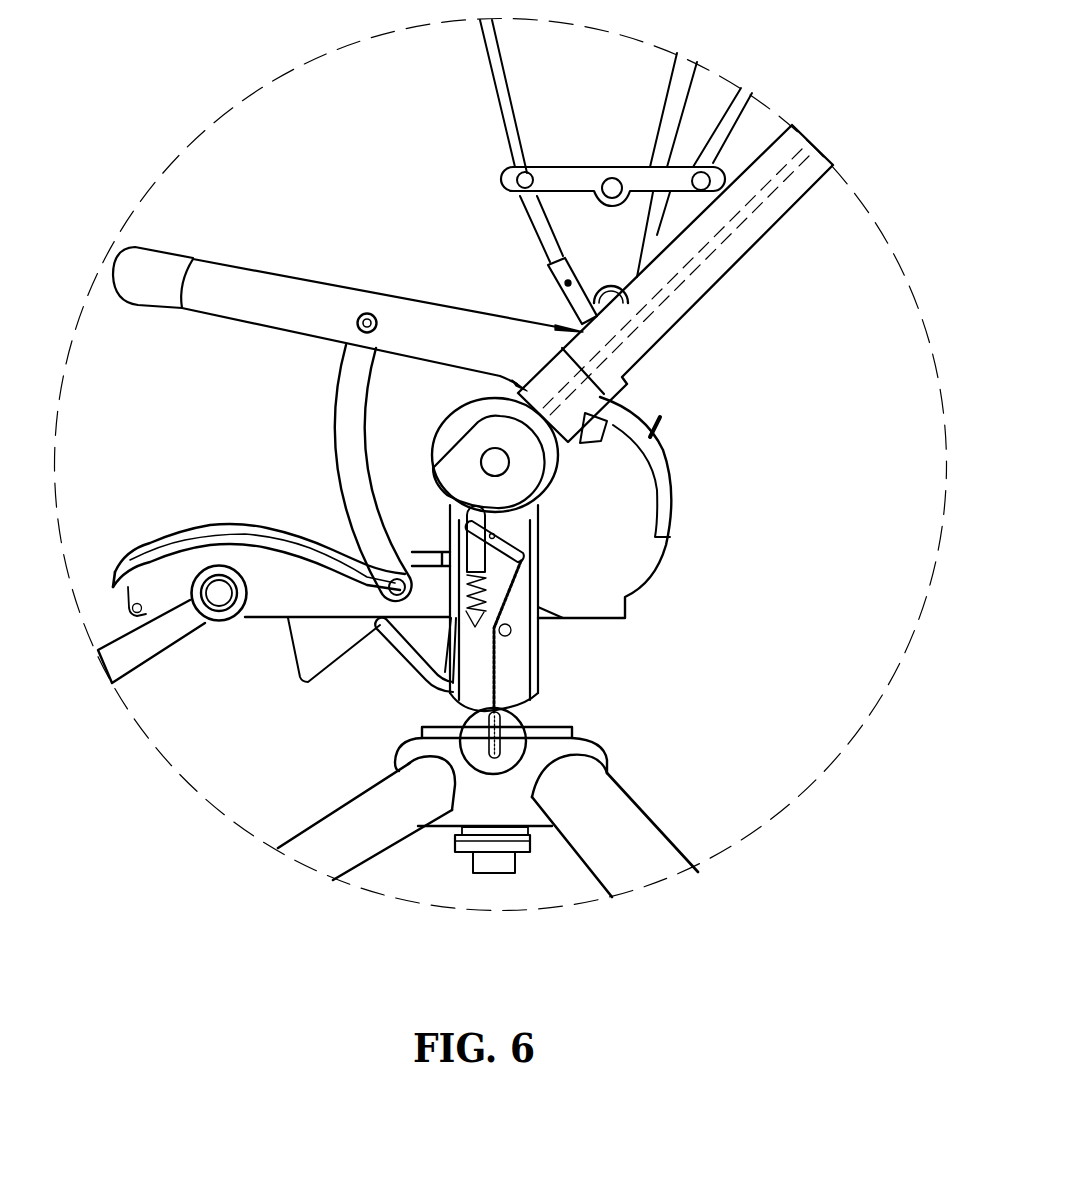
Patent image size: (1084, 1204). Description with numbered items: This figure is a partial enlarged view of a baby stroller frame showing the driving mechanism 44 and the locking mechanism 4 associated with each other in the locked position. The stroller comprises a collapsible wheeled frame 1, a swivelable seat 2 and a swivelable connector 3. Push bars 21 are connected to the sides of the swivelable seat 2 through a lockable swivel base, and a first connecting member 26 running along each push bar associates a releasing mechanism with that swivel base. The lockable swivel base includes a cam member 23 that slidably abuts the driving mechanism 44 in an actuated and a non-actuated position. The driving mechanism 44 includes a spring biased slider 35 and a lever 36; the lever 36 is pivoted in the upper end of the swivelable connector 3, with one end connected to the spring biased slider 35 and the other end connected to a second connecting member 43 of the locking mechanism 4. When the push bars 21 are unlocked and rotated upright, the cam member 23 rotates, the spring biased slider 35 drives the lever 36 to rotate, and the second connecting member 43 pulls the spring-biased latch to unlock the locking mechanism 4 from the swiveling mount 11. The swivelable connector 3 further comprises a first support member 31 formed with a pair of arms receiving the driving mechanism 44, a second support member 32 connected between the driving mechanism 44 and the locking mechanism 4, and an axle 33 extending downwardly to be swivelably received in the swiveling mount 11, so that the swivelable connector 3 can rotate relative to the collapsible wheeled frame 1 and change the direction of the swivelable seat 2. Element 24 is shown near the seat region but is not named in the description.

The collapsible wheeled frame 1 is at (708, 821).
The swivelable seat 2 is at (828, 297).
The swivelable connector 3 is at (715, 653).
The locking mechanism 4 is at (478, 755).
The swiveling mount 11 is at (507, 811).
The push bars 21 is at (660, 322).
The cam member 23 is at (483, 450).
The footrest 24 is at (307, 657).
The first connecting member 26 is at (793, 187).
The first support member 31 is at (537, 687).
The second support member 32 is at (398, 647).
The axle 33 is at (494, 870).
The spring biased slider 35 is at (468, 548).
The lever 36 is at (510, 537).
The second connecting member 43 is at (500, 643).
The driving mechanism 44 is at (608, 577).